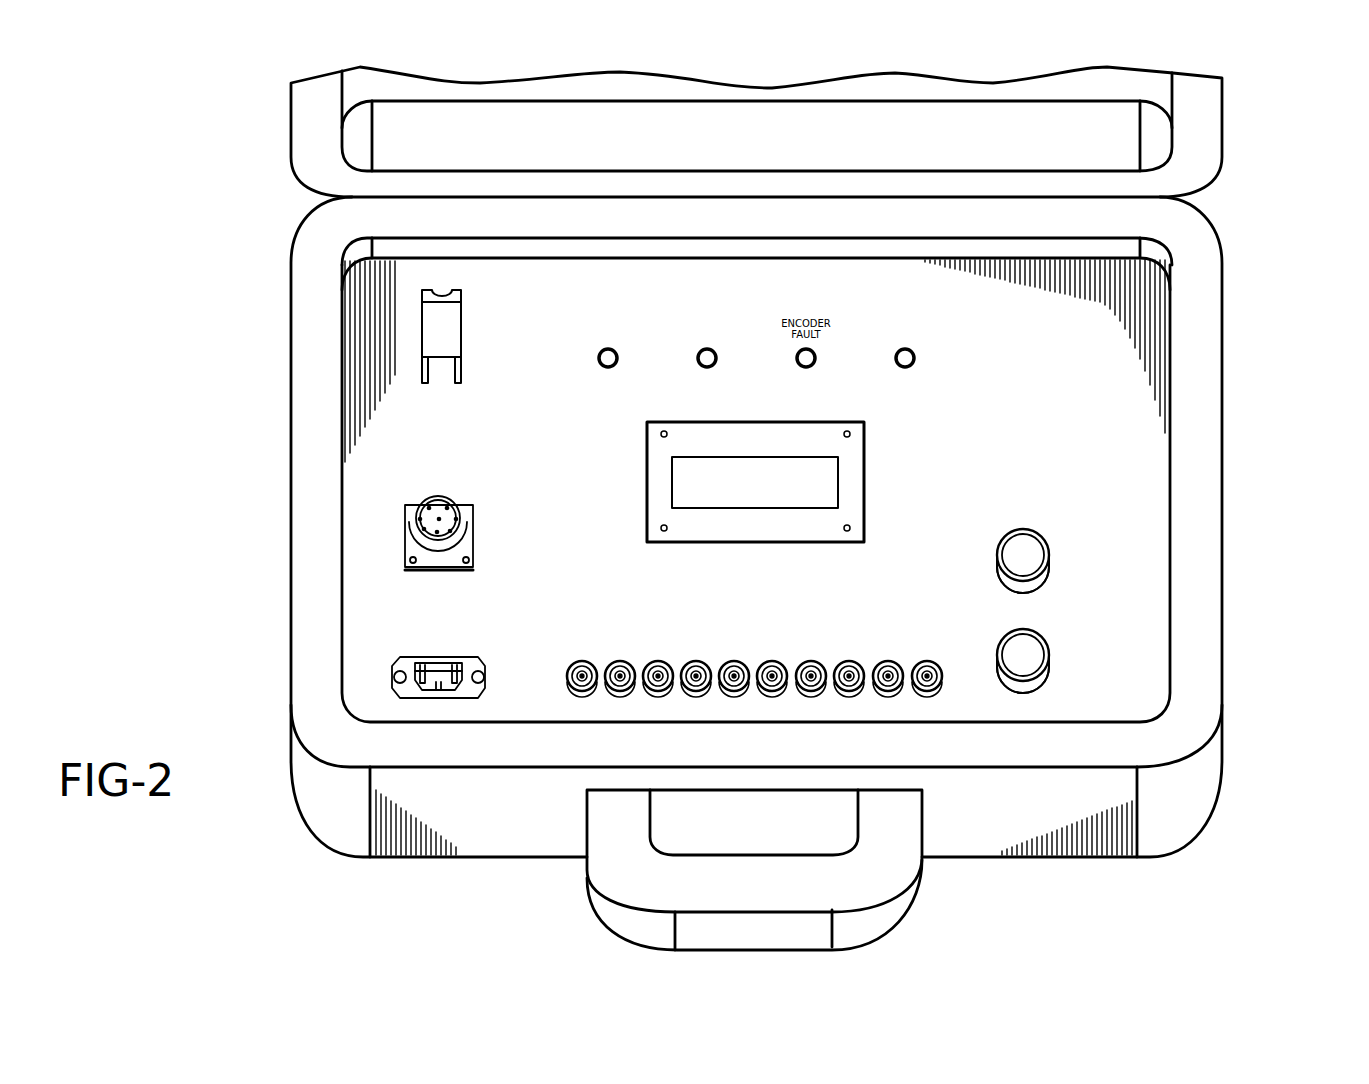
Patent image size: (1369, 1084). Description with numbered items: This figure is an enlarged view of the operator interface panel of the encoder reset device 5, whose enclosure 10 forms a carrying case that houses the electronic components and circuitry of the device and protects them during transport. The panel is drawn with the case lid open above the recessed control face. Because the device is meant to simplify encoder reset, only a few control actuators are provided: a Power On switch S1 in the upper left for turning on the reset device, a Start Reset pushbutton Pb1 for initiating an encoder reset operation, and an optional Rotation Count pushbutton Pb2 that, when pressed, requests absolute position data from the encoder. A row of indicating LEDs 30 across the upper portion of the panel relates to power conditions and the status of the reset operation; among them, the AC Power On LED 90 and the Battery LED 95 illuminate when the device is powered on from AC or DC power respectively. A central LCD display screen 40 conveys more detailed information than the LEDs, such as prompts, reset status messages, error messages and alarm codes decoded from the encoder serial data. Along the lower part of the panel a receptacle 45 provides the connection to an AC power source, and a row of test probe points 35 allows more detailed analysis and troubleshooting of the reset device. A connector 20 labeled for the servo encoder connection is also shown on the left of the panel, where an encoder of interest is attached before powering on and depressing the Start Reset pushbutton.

The encoder reset device 5 is at (1299, 196).
The enclosure 10 is at (1195, 410).
The Power On switch S1 is at (435, 336).
The AC Power On LED 90 is at (602, 368).
The Battery power LED 95 is at (701, 368).
The indicating LEDs 30 is at (919, 371).
The LCD display screen 40 is at (808, 486).
The servo encoder connection 20 is at (410, 512).
The receptacle 45 is at (400, 662).
The test probe points 35 is at (578, 703).
The Start Reset pushbutton Pb1 is at (1030, 560).
The Rotation Count pushbutton Pb2 is at (1030, 662).